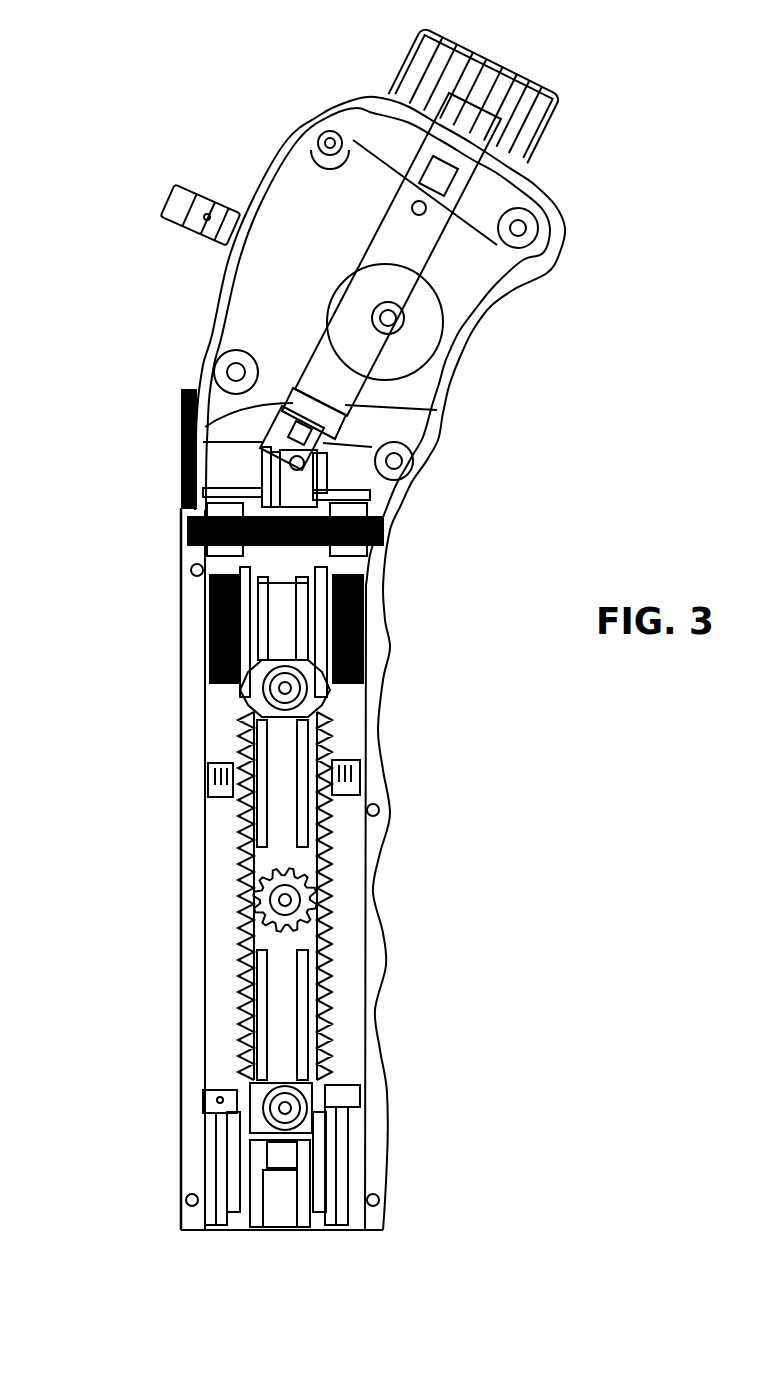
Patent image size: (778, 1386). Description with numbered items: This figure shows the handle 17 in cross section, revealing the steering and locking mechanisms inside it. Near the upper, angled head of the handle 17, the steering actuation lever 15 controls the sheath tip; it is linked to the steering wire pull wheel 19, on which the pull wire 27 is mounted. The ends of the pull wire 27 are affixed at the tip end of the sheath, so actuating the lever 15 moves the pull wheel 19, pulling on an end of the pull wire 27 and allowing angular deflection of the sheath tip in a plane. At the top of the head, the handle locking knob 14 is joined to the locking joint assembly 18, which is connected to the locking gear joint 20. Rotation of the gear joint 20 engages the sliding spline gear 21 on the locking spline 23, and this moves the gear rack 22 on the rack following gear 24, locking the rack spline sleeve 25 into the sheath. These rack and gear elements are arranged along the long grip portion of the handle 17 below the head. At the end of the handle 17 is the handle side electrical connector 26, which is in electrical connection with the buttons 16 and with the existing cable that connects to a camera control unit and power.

The handle locking knob 14 is at (483, 78).
The steering actuation lever 15 is at (207, 214).
The buttons 16 is at (187, 423).
The handle 17 is at (203, 303).
The locking joint assembly 18 is at (370, 303).
The steering wire pull wheel 19 is at (397, 353).
The locking gear joint 20 is at (293, 505).
The sliding spline gear 21 is at (337, 552).
The gear rack 22 is at (347, 735).
The locking spline 23 is at (205, 598).
The rack following gear 24 is at (303, 912).
The locking rack spline sleeve 25 is at (220, 1100).
The handle side electrical connector 26 is at (290, 1203).
The pull wire 27 is at (207, 1157).